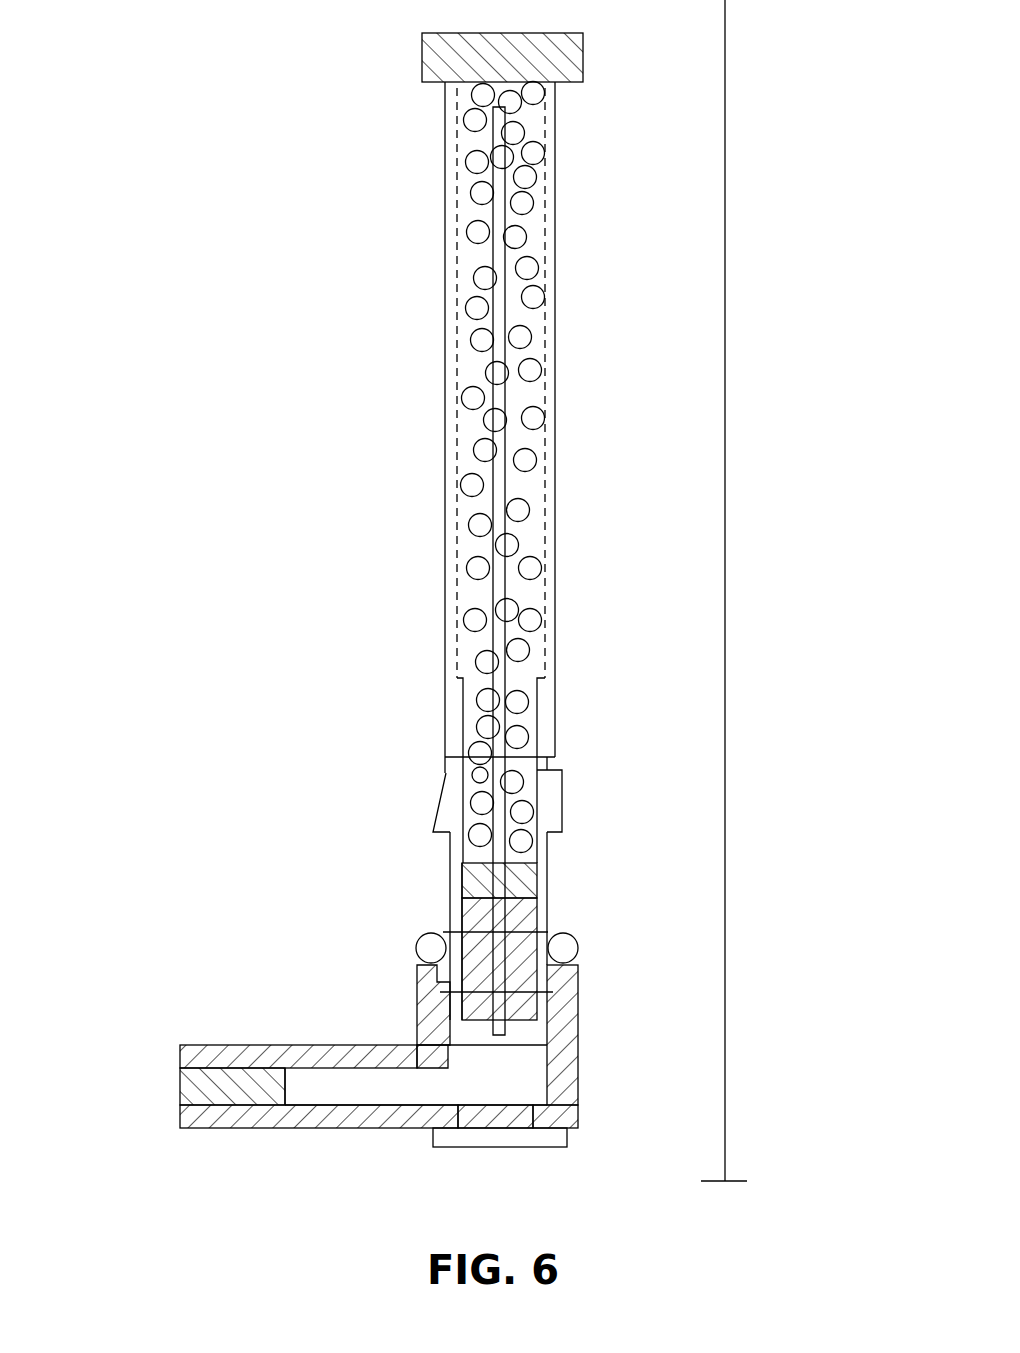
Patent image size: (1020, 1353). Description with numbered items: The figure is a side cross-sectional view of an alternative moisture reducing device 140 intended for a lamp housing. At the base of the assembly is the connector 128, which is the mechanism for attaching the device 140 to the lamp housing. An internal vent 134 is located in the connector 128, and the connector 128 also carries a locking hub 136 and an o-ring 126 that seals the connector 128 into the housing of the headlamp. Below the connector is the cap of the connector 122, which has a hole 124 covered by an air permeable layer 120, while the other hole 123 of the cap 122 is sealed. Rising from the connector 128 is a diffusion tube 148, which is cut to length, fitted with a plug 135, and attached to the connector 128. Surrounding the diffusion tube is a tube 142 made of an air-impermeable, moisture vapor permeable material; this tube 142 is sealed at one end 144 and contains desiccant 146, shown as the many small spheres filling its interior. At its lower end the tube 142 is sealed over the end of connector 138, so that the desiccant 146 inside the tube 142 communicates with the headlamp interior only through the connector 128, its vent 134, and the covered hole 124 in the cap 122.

The air permeable layer 120 is at (470, 1147).
The cap of the connector 122 is at (258, 1130).
The hole of the cap 123 is at (190, 1078).
The hole 124 is at (508, 1118).
The o-ring 126 is at (567, 943).
The connector 128 is at (548, 843).
The internal vent 134 is at (478, 772).
The plug 135 is at (473, 878).
The locking hub 136 is at (562, 772).
The end of connector 138 is at (455, 690).
The moisture reducing device 140 is at (727, 612).
The tube 142 is at (445, 388).
The sealed end 144 is at (440, 52).
The desiccant 146 is at (472, 233).
The diffusion tube 148 is at (495, 346).